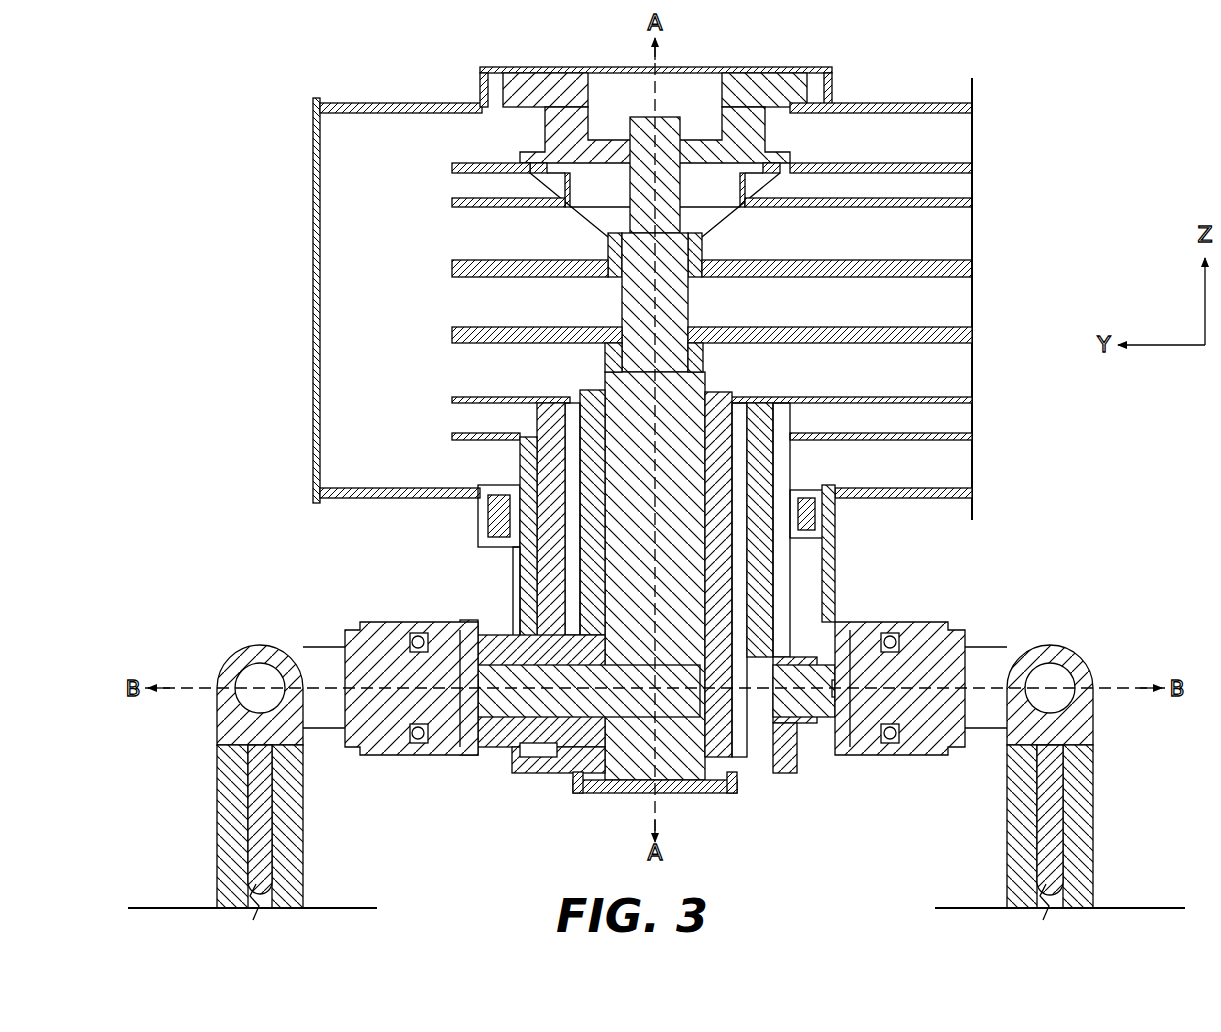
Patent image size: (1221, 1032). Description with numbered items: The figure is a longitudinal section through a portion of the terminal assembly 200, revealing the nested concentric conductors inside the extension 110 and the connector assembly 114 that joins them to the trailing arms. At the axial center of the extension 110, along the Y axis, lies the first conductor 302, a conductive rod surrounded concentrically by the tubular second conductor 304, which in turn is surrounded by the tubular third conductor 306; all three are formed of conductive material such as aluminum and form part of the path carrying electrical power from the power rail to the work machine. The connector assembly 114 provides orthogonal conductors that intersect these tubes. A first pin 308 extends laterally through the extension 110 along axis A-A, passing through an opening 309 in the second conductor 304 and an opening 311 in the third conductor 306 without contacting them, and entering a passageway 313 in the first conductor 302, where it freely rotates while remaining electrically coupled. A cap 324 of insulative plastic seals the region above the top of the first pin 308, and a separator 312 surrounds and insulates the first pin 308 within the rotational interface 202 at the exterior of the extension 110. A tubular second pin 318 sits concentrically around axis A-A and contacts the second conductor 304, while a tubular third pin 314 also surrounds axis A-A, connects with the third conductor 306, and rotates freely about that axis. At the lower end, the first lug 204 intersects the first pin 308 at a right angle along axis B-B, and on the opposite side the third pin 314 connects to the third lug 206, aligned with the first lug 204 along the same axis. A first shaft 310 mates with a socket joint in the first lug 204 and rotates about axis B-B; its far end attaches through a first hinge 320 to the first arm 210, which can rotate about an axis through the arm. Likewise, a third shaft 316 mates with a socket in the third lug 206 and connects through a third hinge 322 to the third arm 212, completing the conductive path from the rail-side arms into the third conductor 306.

The extension 110 is at (298, 265).
The connector assembly 114 is at (480, 60).
The terminal assembly 200 is at (689, 861).
The rotational interface 202 is at (500, 582).
The first lug 204 is at (575, 695).
The third lug 206 is at (800, 697).
The first arm 210 is at (232, 825).
The third arm 212 is at (1085, 892).
The first conductor 302 is at (935, 298).
The second conductor 304 is at (938, 243).
The third conductor 306 is at (945, 190).
The first pin 308 is at (636, 508).
The opening 309 is at (695, 190).
The first shaft 310 is at (367, 650).
The opening 311 is at (542, 160).
The separator 312 is at (722, 505).
The passageway 313 is at (606, 238).
The third pin 314 is at (790, 592).
The third shaft 316 is at (927, 708).
The second pin 318 is at (758, 568).
The first hinge 320 is at (258, 677).
The third hinge 322 is at (1068, 683).
The cap 324 is at (790, 80).